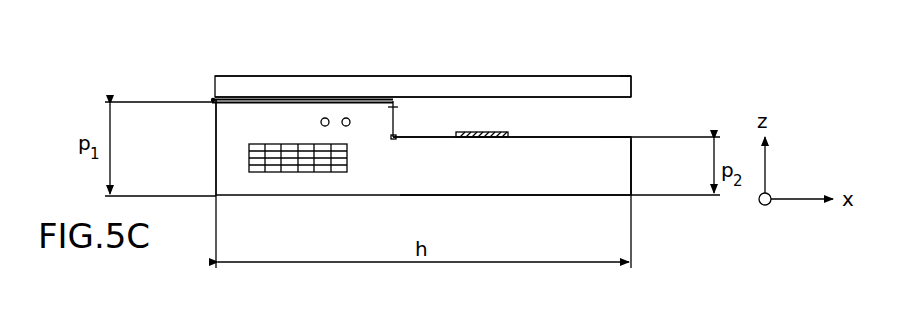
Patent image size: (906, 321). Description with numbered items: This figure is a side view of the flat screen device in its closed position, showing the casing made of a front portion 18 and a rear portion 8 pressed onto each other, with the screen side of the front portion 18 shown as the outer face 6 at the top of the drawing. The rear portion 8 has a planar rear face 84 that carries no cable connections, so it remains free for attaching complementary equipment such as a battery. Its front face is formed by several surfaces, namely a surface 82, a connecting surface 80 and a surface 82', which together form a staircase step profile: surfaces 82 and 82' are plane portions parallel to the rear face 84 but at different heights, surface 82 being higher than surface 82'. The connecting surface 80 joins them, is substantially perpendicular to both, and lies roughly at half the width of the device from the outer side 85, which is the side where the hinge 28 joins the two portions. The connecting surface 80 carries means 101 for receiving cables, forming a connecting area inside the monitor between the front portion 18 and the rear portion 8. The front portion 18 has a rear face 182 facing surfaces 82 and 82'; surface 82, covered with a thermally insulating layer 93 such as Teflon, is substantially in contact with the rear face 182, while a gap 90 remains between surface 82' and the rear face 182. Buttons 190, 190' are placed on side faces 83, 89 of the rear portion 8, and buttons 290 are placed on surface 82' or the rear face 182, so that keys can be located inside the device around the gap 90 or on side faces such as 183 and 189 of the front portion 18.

The front portion 18 is at (642, 87).
The upper surface 6 is at (420, 76).
The side face of the front portion 189 is at (503, 90).
The rear face of the front portion 182 is at (600, 97).
The side face of the front portion 183 is at (631, 76).
The hinge 28 is at (212, 99).
The layer of thermally insulating material 93 is at (283, 101).
The rear portion 8 is at (372, 172).
The connecting surface 80 is at (395, 118).
The means for receiving cables 101 is at (398, 140).
The gap 90 is at (559, 124).
The side face of the rear portion 89 is at (572, 176).
The surface of the front face of the rear portion 82' is at (625, 119).
The surface of the front face of the rear portion 82 is at (194, 120).
The outer side 85 is at (216, 178).
The side face of the rear portion 83 is at (633, 160).
The rear face 84 is at (560, 196).
The button 190 is at (298, 191).
The button 190' is at (345, 79).
The button 290 is at (480, 137).